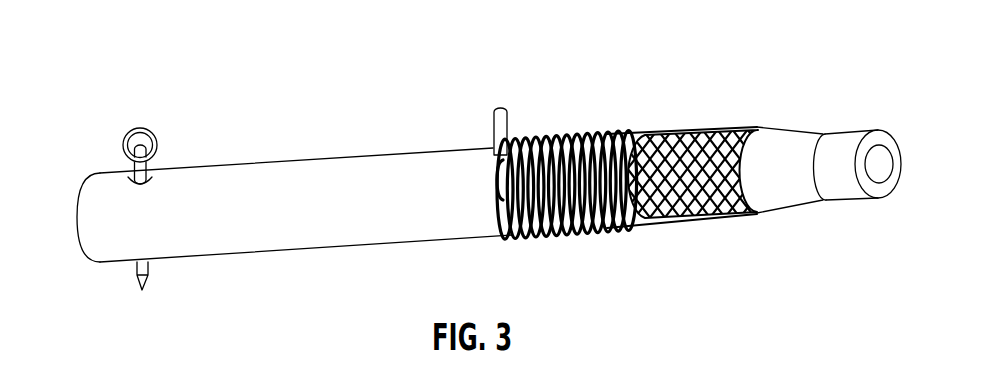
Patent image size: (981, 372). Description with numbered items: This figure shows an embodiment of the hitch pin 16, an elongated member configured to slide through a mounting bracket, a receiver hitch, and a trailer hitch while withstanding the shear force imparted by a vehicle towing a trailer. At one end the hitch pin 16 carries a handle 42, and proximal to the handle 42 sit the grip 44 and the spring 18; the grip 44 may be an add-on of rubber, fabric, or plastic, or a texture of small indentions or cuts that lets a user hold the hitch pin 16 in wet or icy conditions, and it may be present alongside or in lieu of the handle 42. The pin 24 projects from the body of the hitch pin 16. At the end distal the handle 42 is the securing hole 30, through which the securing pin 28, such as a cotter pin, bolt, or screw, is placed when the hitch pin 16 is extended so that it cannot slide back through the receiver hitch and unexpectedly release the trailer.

The hitch pin 16 is at (264, 88).
The securing pin 28 is at (150, 130).
The securing hole 30 is at (132, 175).
The pin 24 is at (498, 108).
The spring 18 is at (580, 236).
The grip 44 is at (722, 128).
The handle 42 is at (833, 93).